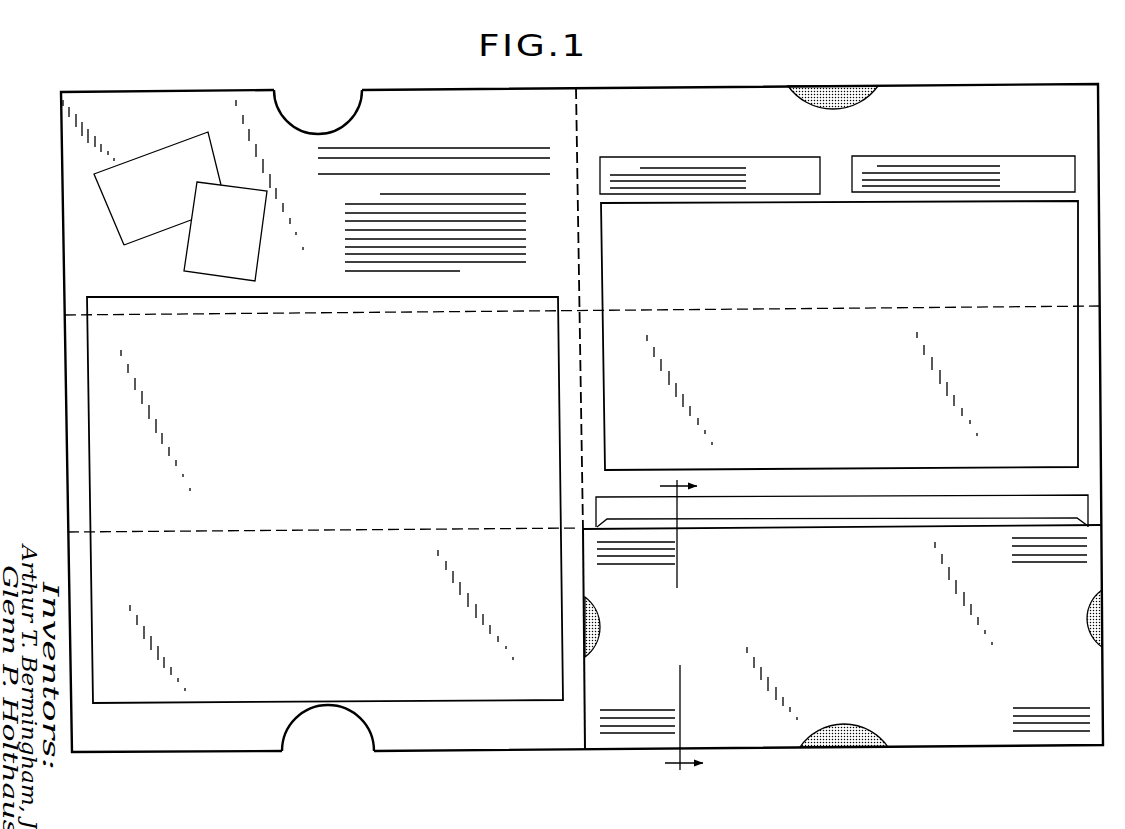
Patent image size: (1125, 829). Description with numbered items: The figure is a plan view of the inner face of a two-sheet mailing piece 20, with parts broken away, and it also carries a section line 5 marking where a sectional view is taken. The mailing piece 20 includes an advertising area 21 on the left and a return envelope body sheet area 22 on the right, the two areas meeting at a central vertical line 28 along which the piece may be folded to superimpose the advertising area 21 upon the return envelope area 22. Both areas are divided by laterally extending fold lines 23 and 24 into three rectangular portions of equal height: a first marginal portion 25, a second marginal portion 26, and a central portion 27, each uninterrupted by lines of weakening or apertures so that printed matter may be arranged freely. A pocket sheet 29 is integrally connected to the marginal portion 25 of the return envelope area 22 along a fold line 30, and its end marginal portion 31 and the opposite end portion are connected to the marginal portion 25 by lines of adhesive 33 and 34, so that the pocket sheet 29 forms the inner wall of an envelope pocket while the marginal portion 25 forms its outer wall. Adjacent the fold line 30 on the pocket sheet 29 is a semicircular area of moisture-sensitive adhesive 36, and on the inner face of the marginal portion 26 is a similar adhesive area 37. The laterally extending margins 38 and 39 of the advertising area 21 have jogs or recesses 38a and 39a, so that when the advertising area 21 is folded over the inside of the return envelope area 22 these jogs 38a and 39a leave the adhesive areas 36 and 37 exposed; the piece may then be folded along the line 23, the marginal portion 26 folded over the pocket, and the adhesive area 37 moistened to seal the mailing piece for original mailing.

The two-sheet mailing piece 20 is at (47, 94).
The advertising area 21 is at (428, 63).
The return envelope body sheet area 22 is at (967, 84).
The fold line 23 is at (67, 532).
The fold line 24 is at (66, 315).
The first marginal portion 25 is at (460, 732).
The second marginal portion 26 is at (492, 122).
The central portion 27 is at (510, 390).
The central vertical line 28 is at (580, 87).
The pocket sheet 29 is at (876, 576).
The fold line 30 is at (938, 746).
The end marginal portion 31 is at (597, 685).
The line of adhesive 33 is at (598, 612).
The line of adhesive 34 is at (1090, 607).
The semicircular area of moisture-sensitive adhesive 36 is at (856, 726).
The area of moisture-sensitive adhesive 37 is at (838, 97).
The laterally extending margin 38 is at (183, 752).
The jog 38a is at (362, 728).
The laterally extending margin 39 is at (182, 72).
The jog 39a is at (360, 108).
The section line 5- 5 is at (671, 625).